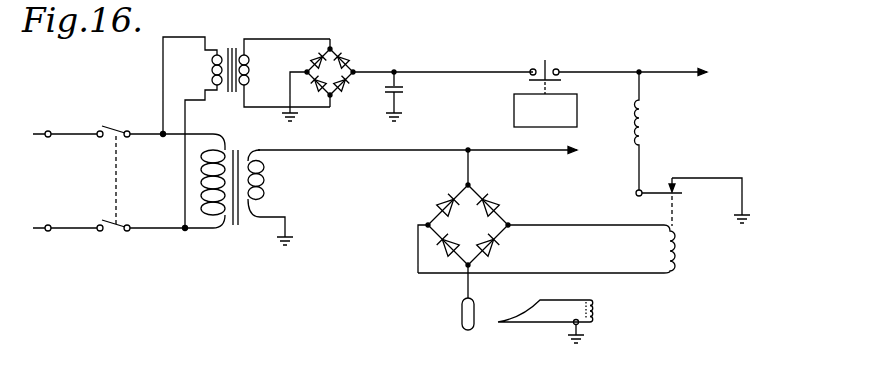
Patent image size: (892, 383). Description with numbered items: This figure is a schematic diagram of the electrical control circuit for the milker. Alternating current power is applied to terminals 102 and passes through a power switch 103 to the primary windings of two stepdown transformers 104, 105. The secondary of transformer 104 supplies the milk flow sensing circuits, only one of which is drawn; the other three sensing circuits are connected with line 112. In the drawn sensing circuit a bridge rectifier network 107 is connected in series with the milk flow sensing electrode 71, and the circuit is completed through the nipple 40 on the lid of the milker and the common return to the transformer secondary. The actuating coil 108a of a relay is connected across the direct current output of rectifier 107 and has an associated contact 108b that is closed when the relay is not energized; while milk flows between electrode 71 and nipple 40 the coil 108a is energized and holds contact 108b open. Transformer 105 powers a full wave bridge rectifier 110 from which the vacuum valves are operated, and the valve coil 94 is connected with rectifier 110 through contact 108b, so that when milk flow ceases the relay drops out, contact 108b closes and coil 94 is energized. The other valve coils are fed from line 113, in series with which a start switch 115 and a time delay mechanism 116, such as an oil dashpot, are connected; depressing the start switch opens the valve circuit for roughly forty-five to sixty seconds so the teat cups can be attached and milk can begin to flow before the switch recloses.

The stepdown transformer 105 is at (231, 45).
The full wave bridge rectifier 110 is at (333, 50).
The start switch 115 is at (553, 64).
The time delay mechanism 116 is at (569, 106).
The line 113 is at (665, 71).
The actuating coil 94 is at (645, 121).
The contact 108b is at (658, 191).
The actuating coil of relay 108a is at (678, 254).
The line 112 is at (538, 149).
The bridge rectifier network 107 is at (495, 209).
The milk flow sensing electrode 71 is at (462, 313).
The nipple 40 is at (556, 304).
The terminals 102 is at (48, 225).
The power switch 103 is at (119, 177).
The stepdown transformer 104 is at (235, 230).